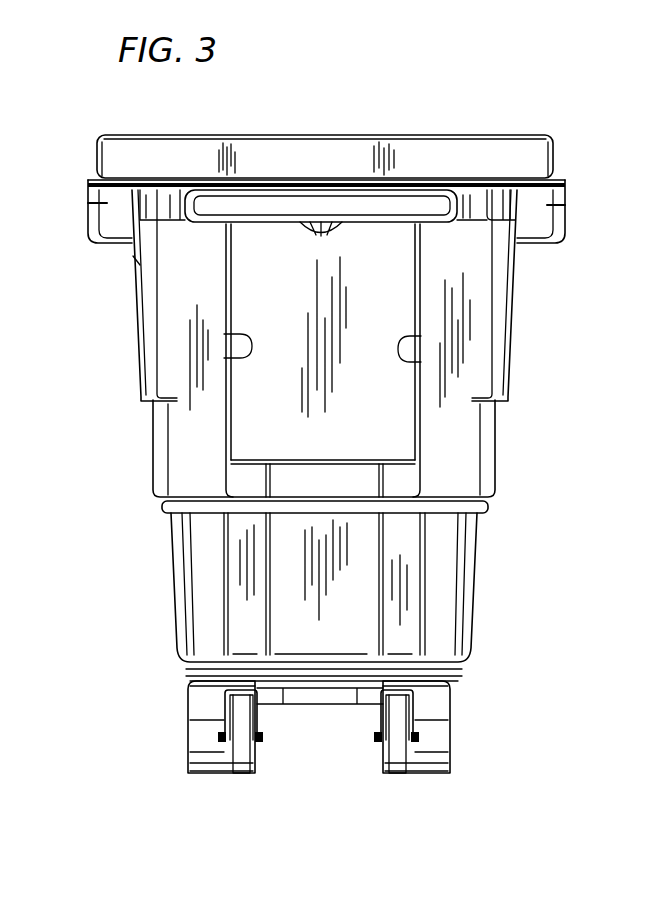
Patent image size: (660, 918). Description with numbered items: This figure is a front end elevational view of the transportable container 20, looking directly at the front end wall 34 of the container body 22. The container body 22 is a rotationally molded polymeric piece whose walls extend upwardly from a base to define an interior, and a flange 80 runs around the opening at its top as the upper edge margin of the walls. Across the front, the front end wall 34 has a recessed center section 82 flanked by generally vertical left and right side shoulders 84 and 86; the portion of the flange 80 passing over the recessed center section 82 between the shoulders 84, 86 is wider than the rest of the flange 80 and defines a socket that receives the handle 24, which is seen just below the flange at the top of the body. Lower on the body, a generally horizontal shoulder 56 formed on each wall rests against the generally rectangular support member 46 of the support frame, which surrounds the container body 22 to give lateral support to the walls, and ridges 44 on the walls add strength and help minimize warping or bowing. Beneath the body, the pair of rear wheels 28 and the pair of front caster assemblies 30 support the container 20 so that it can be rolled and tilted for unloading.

The transportable container 20 is at (466, 108).
The container body 22 is at (365, 128).
The handle 24 is at (259, 203).
The rear wheels 28 is at (203, 705).
The front caster assemblies 30 is at (375, 749).
The front end wall 34 is at (183, 284).
The ridges 44 is at (470, 400).
The support member 46 is at (252, 508).
The horizontal shoulder 56 is at (160, 502).
The flange 80 is at (557, 158).
The recessed center section 82 is at (375, 298).
The left side shoulder 84 is at (250, 346).
The right side shoulder 86 is at (403, 347).